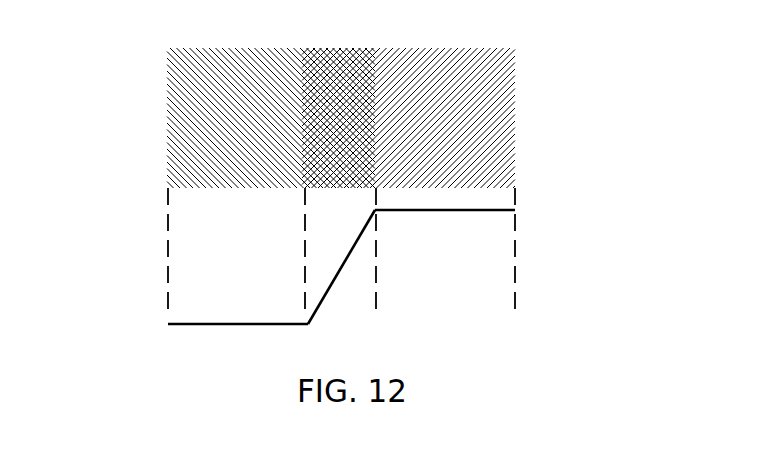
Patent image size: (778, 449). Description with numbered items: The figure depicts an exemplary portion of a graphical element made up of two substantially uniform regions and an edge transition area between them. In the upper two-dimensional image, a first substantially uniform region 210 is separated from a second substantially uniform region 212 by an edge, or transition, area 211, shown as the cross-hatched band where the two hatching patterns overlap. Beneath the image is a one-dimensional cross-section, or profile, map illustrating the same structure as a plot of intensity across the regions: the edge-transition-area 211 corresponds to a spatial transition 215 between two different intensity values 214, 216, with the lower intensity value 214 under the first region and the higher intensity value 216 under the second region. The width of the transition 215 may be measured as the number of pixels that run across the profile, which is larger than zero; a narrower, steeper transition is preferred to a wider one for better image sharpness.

The first substantially uniform region 210 is at (158, 110).
The edge-transition-area 211 is at (335, 43).
The second substantially uniform region 212 is at (524, 158).
The intensity value 214 is at (263, 313).
The spatial transition 215 is at (343, 282).
The intensity value 216 is at (430, 220).